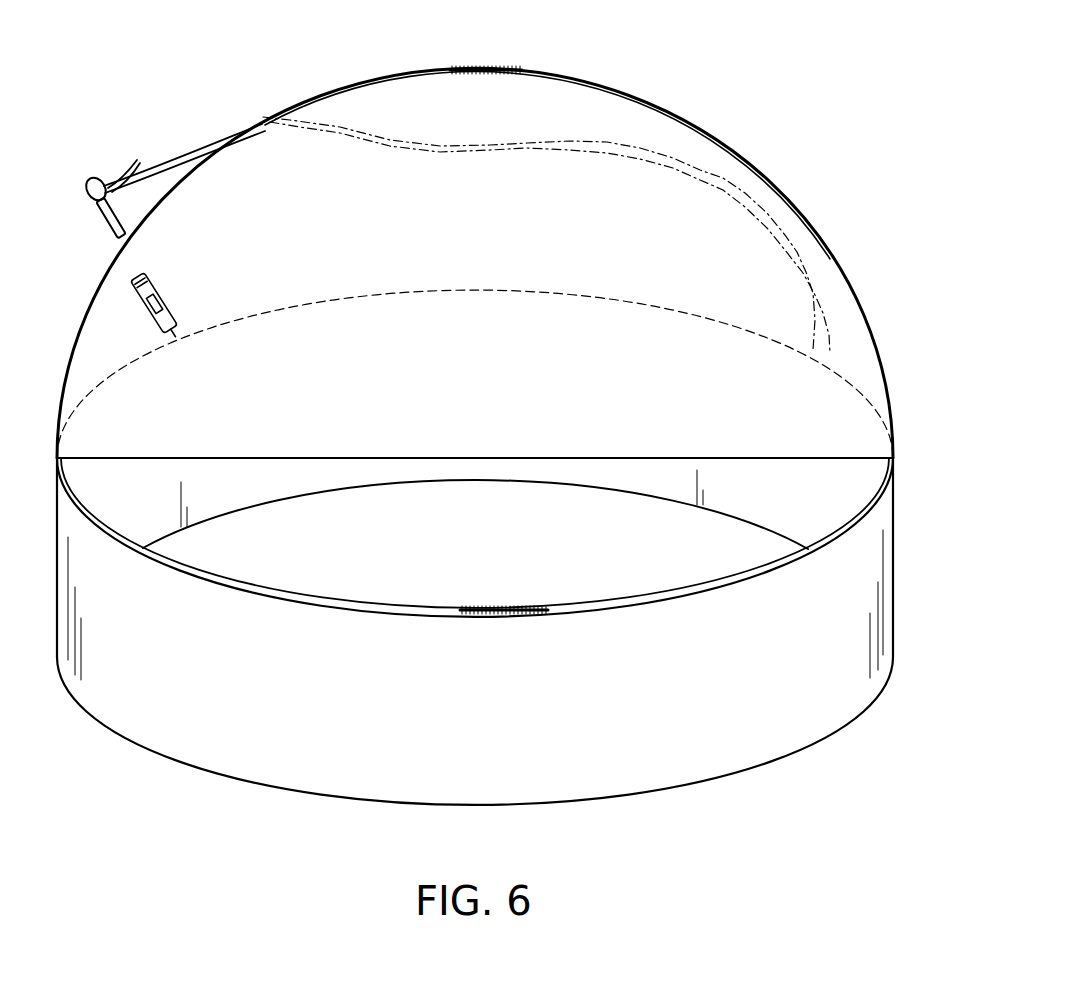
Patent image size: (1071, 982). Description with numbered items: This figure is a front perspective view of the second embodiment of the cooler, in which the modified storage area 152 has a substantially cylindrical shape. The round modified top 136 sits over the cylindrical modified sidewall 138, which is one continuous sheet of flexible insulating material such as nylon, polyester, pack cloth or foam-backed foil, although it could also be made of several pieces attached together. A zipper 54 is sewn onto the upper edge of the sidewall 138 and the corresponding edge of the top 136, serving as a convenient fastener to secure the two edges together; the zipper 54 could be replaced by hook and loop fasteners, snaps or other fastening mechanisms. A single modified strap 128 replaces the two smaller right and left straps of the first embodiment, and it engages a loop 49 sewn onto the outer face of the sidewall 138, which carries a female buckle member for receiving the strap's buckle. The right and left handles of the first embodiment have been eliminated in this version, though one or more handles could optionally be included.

The modified top 136 is at (615, 120).
The modified sidewall 138 is at (185, 722).
The modified storage area 152 is at (501, 564).
The zipper 54 is at (467, 68).
The modified strap 128 is at (165, 160).
The loop 49 is at (176, 330).